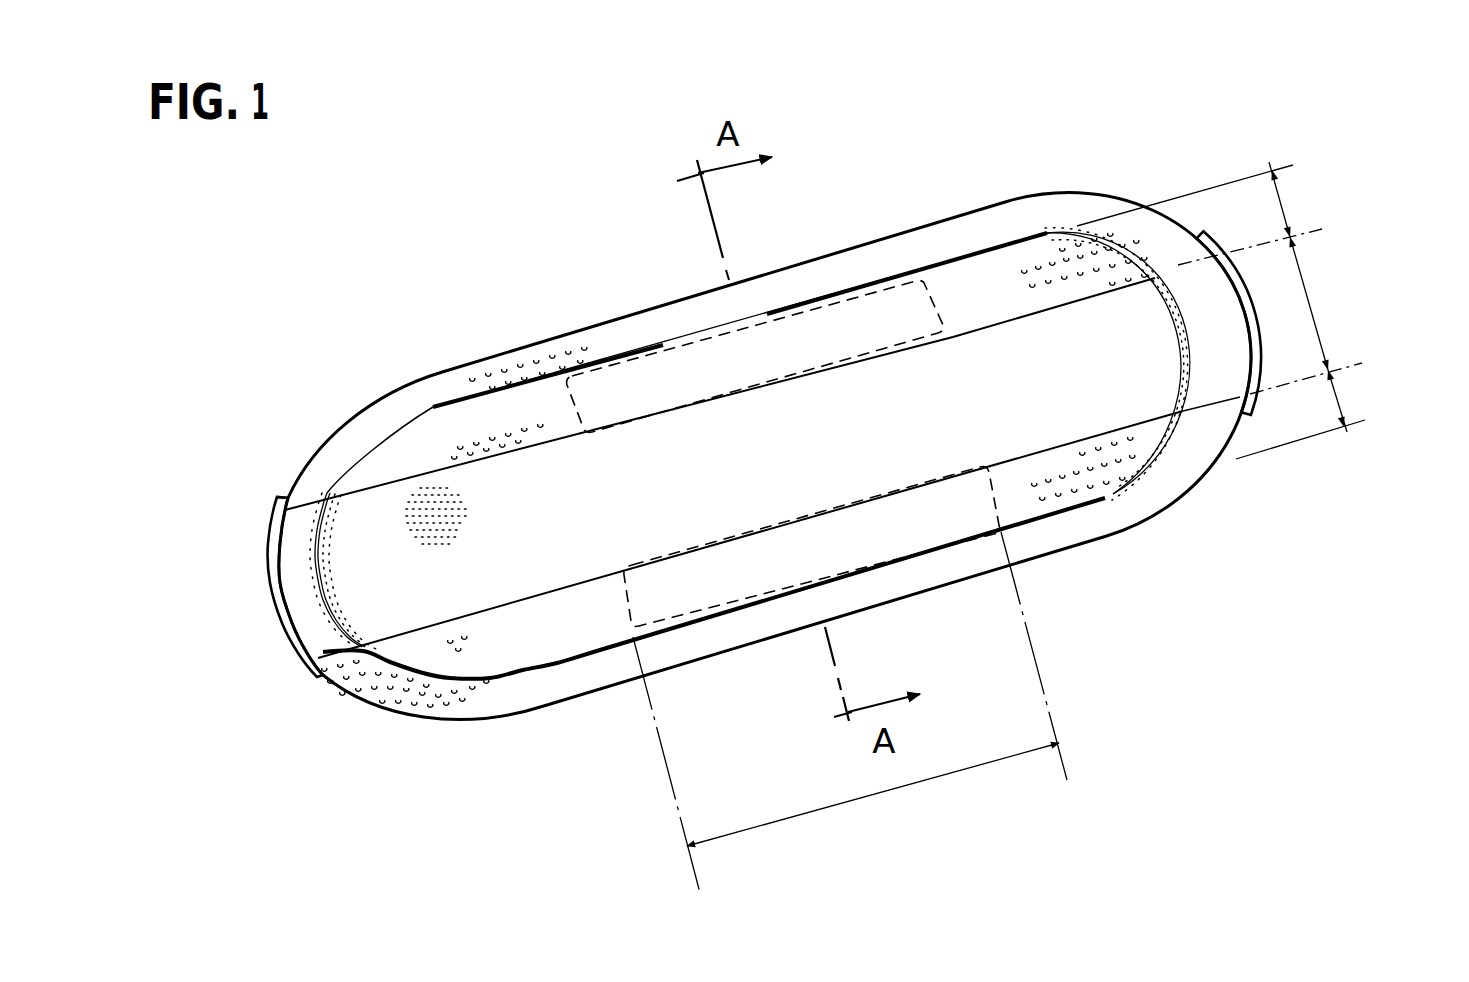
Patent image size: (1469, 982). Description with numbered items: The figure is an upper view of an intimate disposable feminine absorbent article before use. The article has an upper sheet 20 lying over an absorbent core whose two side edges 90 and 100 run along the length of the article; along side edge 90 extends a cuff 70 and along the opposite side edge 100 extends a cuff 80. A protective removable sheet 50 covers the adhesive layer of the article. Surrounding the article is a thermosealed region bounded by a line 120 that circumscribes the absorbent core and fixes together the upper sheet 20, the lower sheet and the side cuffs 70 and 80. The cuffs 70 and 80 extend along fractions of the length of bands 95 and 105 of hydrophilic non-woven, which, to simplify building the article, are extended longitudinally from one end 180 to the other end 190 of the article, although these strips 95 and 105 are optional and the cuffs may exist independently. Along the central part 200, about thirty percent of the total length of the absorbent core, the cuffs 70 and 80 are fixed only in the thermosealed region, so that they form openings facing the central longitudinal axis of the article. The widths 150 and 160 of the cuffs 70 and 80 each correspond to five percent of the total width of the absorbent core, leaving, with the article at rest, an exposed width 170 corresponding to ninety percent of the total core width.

The upper sheet 20 is at (1010, 358).
The protective removable sheet 50 is at (277, 503).
The cuff 70 is at (641, 418).
The cuff 80 is at (733, 542).
The side edge 90 is at (826, 290).
The band of hydrophilic non-woven 95 is at (1010, 279).
The side edge 100 is at (433, 405).
The band of hydrophilic non-woven 105 is at (1076, 472).
The line 120 is at (320, 450).
The width 150 is at (1279, 197).
The width 160 is at (1335, 393).
The exposed width 170 is at (1299, 297).
The end 180 is at (1386, 278).
The end 190 is at (243, 598).
The central part 200 is at (890, 788).